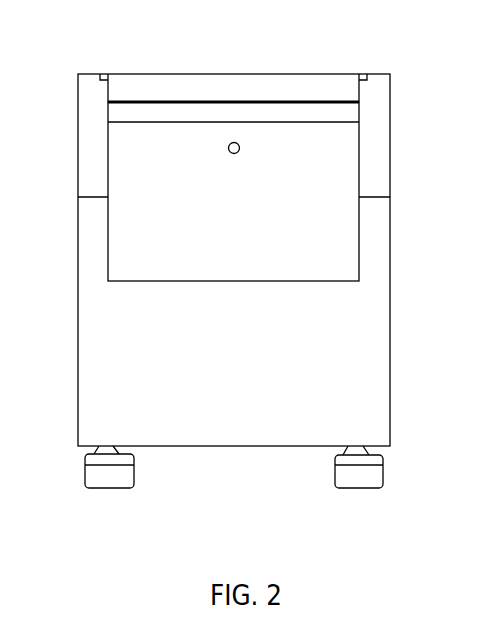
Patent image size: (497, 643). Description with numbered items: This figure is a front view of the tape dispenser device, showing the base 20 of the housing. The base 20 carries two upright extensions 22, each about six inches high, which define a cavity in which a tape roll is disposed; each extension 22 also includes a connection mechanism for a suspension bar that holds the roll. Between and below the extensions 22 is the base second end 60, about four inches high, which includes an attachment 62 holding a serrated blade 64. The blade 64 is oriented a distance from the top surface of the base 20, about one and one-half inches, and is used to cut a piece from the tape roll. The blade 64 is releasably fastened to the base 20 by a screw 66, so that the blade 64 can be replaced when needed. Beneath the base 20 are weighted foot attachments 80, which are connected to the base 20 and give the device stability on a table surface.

The base 20 is at (293, 456).
The extensions 22 is at (88, 88).
The base second end 60 is at (92, 357).
The attachment 62 is at (335, 168).
The serrated blade 64 is at (337, 100).
The screw 66 is at (232, 143).
The weighted foot attachments 80 is at (103, 480).